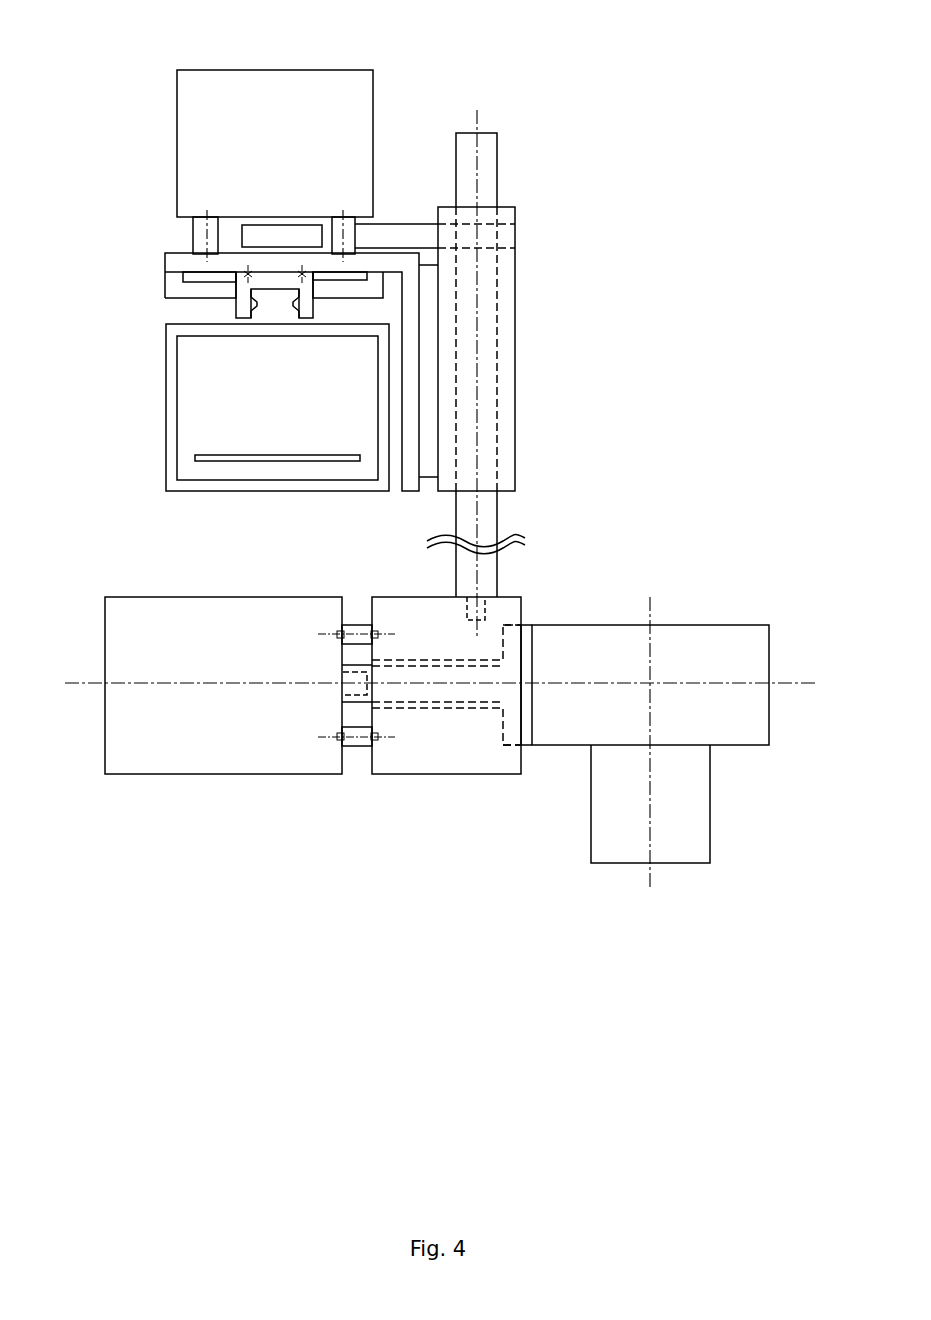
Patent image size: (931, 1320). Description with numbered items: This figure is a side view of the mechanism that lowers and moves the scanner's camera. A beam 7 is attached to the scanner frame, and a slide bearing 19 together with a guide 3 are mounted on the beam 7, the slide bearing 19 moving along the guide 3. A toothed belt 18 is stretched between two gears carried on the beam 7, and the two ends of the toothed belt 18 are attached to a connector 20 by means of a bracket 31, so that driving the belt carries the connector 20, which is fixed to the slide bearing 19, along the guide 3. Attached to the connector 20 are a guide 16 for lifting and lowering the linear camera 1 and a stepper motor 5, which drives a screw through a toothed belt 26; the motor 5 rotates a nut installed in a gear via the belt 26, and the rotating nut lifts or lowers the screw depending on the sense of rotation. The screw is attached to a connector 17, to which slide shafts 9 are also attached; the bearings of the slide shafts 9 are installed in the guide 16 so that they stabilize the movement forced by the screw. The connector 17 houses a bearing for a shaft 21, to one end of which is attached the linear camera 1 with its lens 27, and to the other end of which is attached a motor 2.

The linear camera 1 is at (717, 648).
The motor 2 is at (130, 725).
The guide 3 is at (275, 307).
The stepper motor 5 is at (205, 160).
The beam 7 is at (172, 426).
The slide shafts 9 is at (488, 157).
The guide 16 is at (505, 372).
The connector 17 is at (415, 624).
The toothed belt 18 is at (190, 276).
The slide bearing 19 is at (242, 287).
The connector 20 is at (175, 265).
The shaft 21 is at (418, 695).
The toothed belt 26 is at (377, 235).
The lens 27 is at (680, 772).
The bracket 31 is at (173, 286).